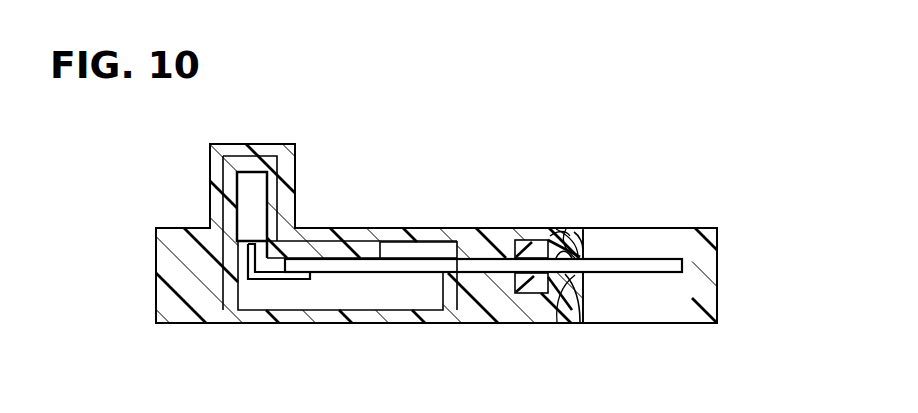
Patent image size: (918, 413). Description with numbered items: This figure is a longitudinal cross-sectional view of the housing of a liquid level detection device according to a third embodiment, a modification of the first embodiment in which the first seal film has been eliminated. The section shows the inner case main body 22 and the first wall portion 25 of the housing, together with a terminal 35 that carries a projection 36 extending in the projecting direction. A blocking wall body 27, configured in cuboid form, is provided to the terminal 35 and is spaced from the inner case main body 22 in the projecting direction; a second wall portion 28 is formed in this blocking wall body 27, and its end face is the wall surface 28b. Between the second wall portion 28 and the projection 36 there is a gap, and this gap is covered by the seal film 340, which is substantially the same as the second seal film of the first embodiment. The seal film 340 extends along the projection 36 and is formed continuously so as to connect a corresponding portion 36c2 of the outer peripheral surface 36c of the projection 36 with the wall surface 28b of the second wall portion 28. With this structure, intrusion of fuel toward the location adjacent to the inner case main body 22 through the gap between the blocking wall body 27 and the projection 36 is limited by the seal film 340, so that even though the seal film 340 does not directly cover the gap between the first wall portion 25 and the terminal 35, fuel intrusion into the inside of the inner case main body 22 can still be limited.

The inner case main body 22 is at (437, 242).
The first wall portion 25 is at (452, 312).
The blocking wall body 27 is at (528, 240).
The second wall portion 28 is at (566, 256).
The wall surface of the second wall portion 28b is at (564, 240).
The terminal 35 is at (356, 276).
The projection 36 is at (545, 240).
The outer peripheral surface of the projection 36c is at (580, 312).
The corresponding portion of the outer peripheral surface 36c2 is at (583, 230).
The seal film 340 is at (560, 292).